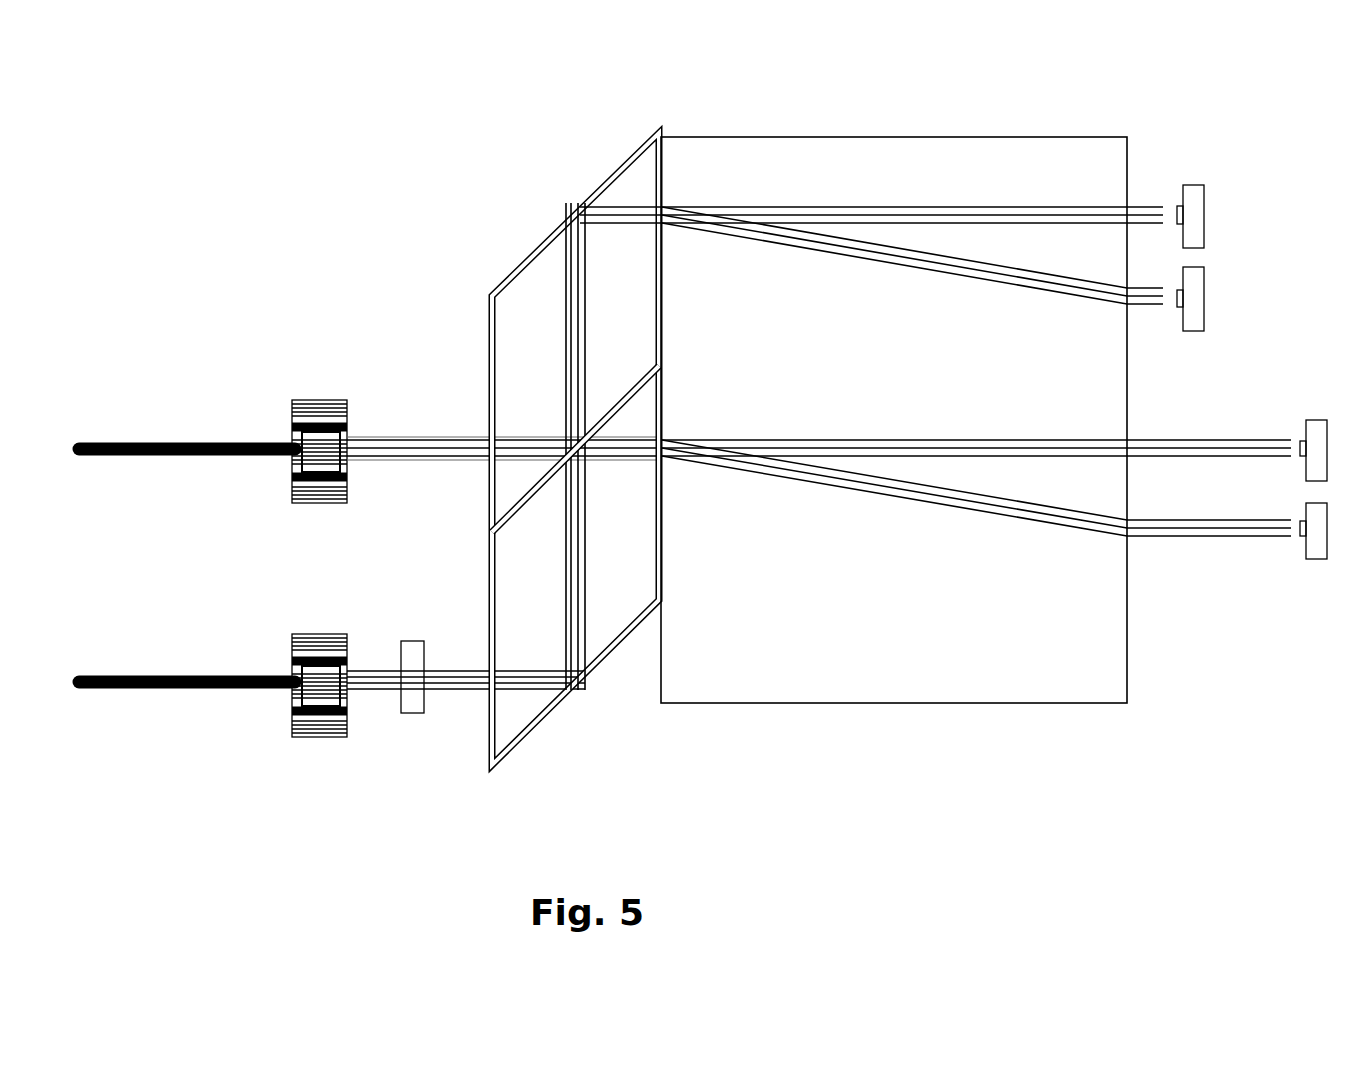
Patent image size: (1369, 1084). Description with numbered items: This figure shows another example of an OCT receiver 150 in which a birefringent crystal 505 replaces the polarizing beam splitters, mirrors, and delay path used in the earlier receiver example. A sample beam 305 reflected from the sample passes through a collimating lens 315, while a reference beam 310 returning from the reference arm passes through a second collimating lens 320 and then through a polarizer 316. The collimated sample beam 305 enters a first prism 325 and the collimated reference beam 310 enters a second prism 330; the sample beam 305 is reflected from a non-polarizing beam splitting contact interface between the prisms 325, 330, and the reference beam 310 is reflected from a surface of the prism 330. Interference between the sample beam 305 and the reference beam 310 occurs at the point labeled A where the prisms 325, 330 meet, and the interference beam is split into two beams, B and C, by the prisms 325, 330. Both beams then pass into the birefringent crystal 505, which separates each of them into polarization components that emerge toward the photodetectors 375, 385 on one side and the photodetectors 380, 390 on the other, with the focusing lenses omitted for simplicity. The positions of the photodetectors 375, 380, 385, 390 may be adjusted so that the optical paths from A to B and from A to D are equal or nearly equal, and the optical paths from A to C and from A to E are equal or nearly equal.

The optical measurement system 150 is at (178, 162).
The sample beam 305 is at (195, 442).
The reference beam 310 is at (182, 670).
The collimating lens 315 is at (318, 398).
The collimating lens 320 is at (312, 632).
The polarizer 316 is at (410, 715).
The prism 325 is at (503, 282).
The prism 330 is at (482, 718).
The photodetector 375 is at (1208, 188).
The photodetector 380 is at (1306, 412).
The photodetector 385 is at (1210, 318).
The photodetector 390 is at (1310, 565).
The birefringent crystal 505 is at (894, 420).